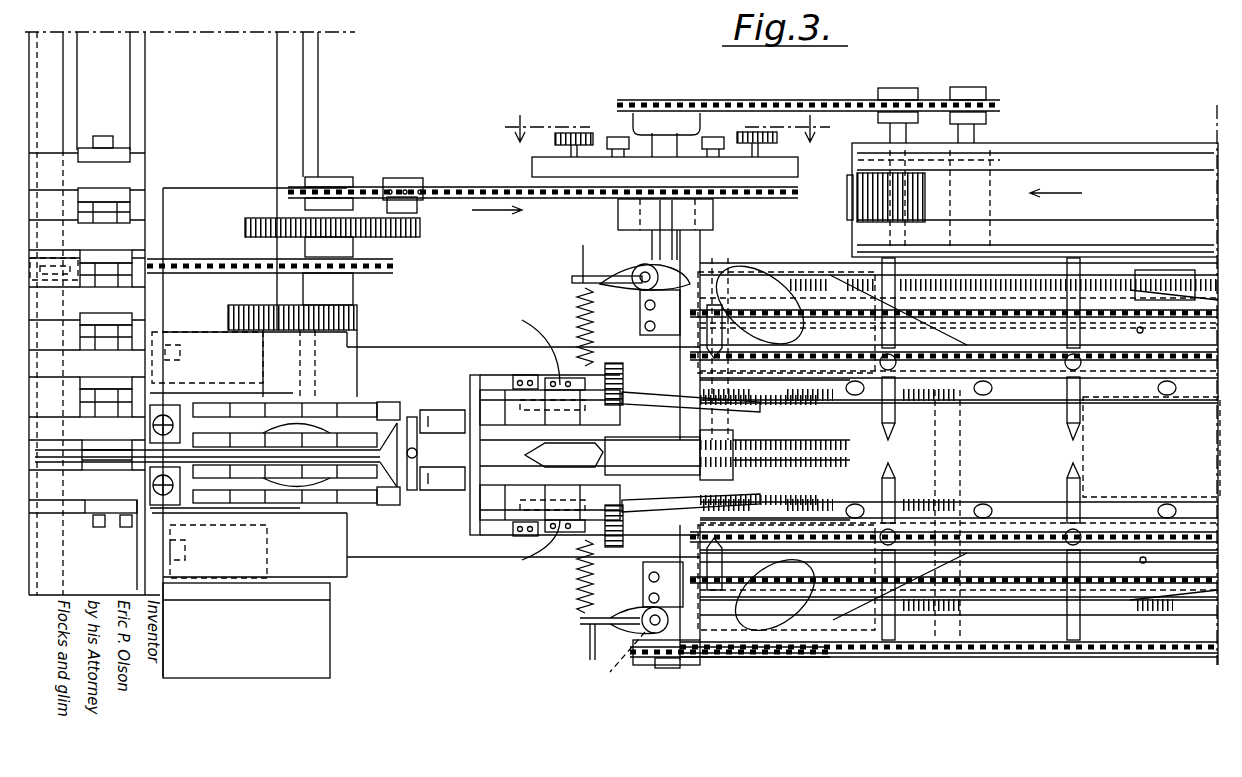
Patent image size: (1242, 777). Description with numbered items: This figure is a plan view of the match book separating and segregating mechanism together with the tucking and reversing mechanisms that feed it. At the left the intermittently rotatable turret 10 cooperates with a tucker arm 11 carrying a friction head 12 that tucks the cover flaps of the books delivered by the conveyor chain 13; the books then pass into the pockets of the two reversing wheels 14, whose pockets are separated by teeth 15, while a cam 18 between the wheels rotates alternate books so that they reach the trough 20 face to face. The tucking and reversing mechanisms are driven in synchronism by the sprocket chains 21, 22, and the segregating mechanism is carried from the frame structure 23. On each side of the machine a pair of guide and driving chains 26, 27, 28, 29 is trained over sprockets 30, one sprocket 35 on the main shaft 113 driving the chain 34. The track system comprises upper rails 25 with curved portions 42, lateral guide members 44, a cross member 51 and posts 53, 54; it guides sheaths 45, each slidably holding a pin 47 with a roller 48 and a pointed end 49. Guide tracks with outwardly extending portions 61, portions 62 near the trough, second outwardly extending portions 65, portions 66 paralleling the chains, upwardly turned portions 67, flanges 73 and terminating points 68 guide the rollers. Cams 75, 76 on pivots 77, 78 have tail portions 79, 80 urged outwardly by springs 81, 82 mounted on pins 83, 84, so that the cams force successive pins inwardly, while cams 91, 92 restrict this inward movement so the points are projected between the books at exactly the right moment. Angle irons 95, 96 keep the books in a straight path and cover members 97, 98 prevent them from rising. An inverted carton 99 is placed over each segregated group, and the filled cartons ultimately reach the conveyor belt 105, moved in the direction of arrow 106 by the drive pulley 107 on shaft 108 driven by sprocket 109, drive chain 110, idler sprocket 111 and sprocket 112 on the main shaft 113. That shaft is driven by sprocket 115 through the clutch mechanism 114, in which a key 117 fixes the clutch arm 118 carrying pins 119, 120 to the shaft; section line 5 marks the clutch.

The section line 5- 5 is at (666, 125).
The turret 10 is at (358, 408).
The tucker arm 11 is at (213, 452).
The friction head 12 is at (445, 412).
The conveyor chain 13 is at (113, 141).
The wheels of reversing mechanism 14 is at (550, 455).
The teeth 15 is at (482, 415).
The cam 18 is at (590, 453).
The trough 20 is at (911, 515).
The sprocket chain 21 is at (437, 186).
The sprocket chain 22 is at (190, 258).
The frame structure 23 is at (405, 347).
The upper rails 25 is at (1170, 330).
The guide and driving chain 26 is at (1050, 580).
The guide and driving chain 27 is at (1125, 540).
The guide and driving chain 28 is at (1190, 350).
The guide and driving chain 29 is at (1155, 285).
The sprocket 30 is at (790, 290).
The chain 34 is at (1210, 655).
The sprocket 35 is at (655, 668).
The curved portions 42 is at (645, 325).
The lateral guide members 44 is at (1005, 290).
The sheath 45 is at (1085, 300).
The pin 47 is at (1078, 290).
The roller 48 is at (920, 500).
The pointed end 49 is at (893, 462).
The cross member 51 is at (940, 429).
The post 53 is at (960, 505).
The post 54 is at (935, 295).
The outwardly extending portions 61 is at (805, 275).
The guide track portions 62 is at (998, 360).
The second outwardly extending portions 65 is at (1205, 280).
The guide track portions 66 is at (1048, 290).
The upwardly turned portions 67 is at (685, 270).
The terminating points 68 is at (758, 260).
The integral flanges 73 is at (1105, 290).
The cam 75 is at (790, 640).
The cam 76 is at (780, 262).
The pivot 77 is at (618, 664).
The pivot 78 is at (640, 268).
The tail portion 79 is at (575, 622).
The tail portion 80 is at (585, 278).
The spring 81 is at (580, 596).
The spring 82 is at (580, 302).
The pin 83 is at (588, 648).
The pin 84 is at (578, 250).
The cam 91 is at (700, 492).
The cam 92 is at (700, 409).
The angle iron 95 is at (1033, 395).
The angle iron 96 is at (1195, 505).
The cover member 97 is at (695, 376).
The cover member 98 is at (699, 521).
The carton 99 is at (1151, 447).
The conveyor belt 105 is at (1032, 385).
The arrow 106 is at (1056, 201).
The drive pulley 107 is at (918, 158).
The shaft 108 is at (895, 88).
The sprocket 109 is at (920, 98).
The drive chain 110 is at (852, 98).
The idler sprocket 111 is at (985, 92).
The sprocket 112 is at (636, 113).
The main shaft 113 is at (660, 97).
The clutch mechanism 114 is at (520, 167).
The sprocket 115 is at (618, 213).
The key 117 is at (683, 130).
The clutch arm 118 is at (705, 160).
The pin 119 is at (572, 133).
The pin 120 is at (750, 132).